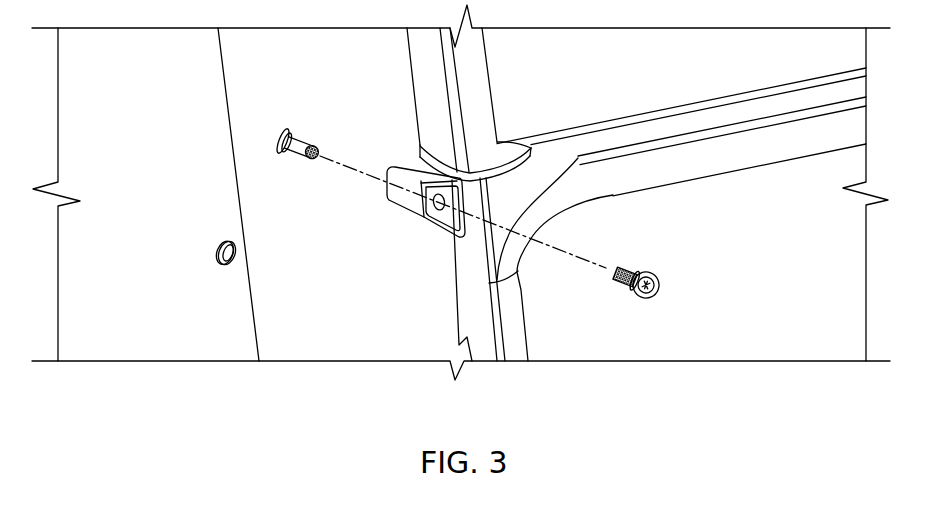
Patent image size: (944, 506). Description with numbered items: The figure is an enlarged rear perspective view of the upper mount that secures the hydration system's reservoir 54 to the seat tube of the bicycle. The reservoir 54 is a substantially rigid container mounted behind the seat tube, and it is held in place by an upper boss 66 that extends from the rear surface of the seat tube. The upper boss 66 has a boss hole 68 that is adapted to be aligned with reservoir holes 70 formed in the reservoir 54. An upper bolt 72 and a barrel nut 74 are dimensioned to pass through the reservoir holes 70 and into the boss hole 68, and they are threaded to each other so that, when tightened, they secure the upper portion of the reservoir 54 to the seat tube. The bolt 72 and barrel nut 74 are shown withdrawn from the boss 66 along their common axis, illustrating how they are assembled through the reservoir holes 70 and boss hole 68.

The reservoir 54 is at (139, 257).
The upper boss 66 is at (405, 213).
The boss hole 68 is at (440, 207).
The reservoir holes 70 is at (233, 267).
The upper bolt 72 is at (633, 264).
The barrel nut 74 is at (303, 133).